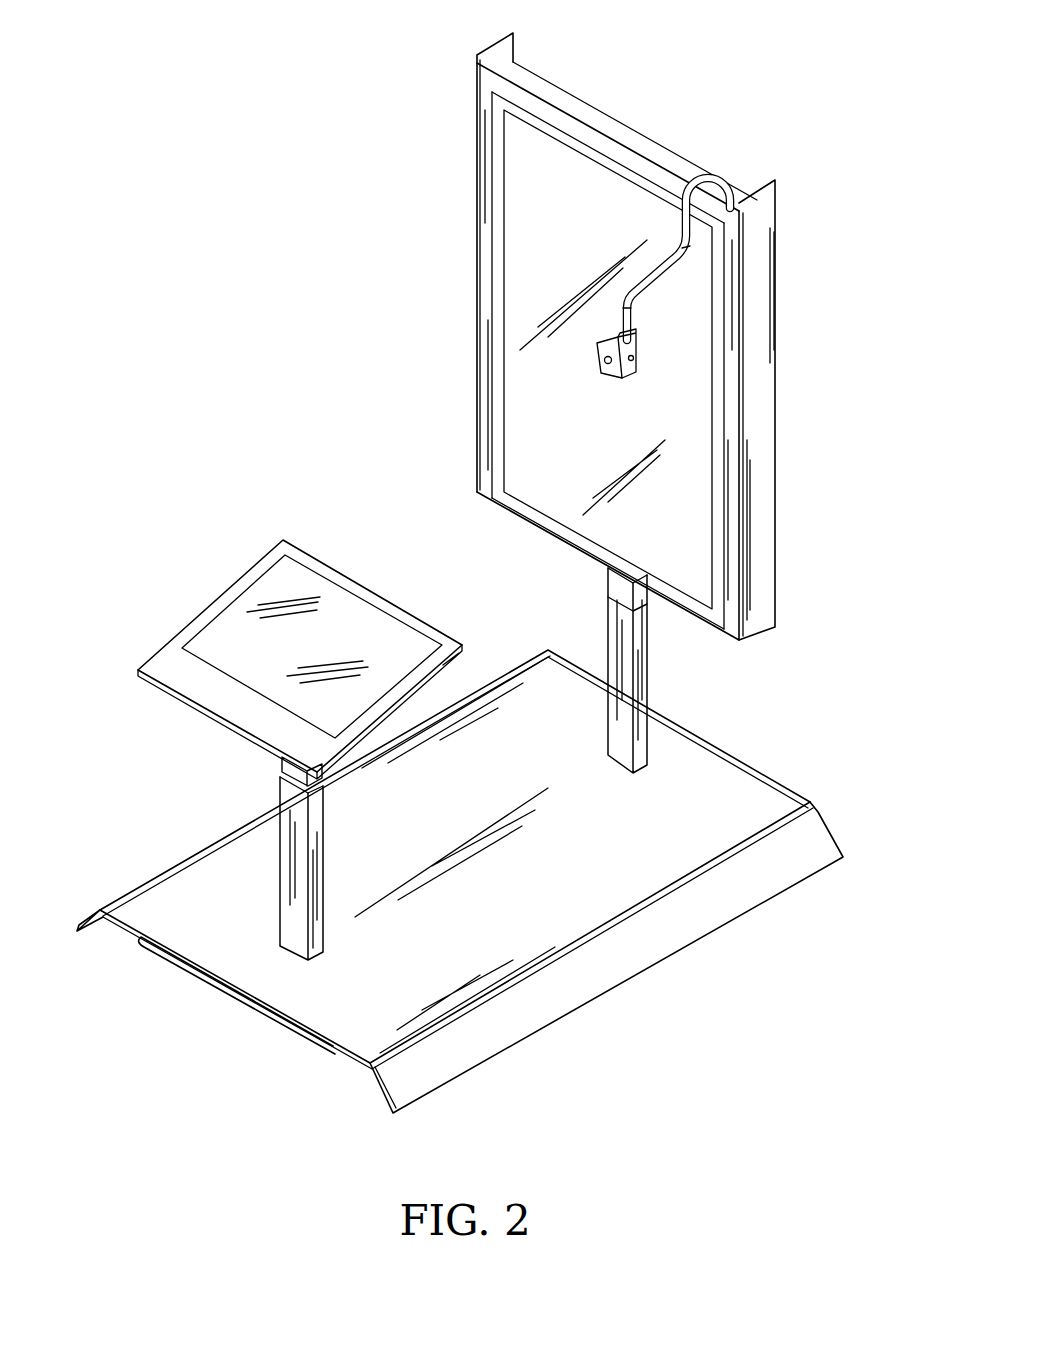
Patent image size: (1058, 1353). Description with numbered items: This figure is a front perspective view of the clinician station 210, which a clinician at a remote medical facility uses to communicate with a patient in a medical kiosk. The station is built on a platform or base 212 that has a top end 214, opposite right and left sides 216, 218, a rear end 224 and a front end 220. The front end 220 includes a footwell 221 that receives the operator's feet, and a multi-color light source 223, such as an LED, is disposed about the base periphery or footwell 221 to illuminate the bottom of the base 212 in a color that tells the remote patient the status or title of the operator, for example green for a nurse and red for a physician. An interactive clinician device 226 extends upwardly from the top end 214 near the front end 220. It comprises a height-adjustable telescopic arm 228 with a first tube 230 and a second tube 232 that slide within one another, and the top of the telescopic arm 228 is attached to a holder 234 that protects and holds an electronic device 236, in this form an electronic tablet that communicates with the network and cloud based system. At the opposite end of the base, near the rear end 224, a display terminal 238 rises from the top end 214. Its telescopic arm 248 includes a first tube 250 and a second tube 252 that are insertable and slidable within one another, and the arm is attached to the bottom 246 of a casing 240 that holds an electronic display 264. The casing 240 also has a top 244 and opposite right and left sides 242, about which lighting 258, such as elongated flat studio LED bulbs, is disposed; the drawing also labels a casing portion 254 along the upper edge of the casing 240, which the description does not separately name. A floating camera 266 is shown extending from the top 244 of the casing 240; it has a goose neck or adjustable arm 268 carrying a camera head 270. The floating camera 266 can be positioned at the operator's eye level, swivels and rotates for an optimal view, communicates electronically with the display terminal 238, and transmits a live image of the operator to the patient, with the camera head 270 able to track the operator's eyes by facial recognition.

The clinician station 210 is at (473, 574).
The base 212 is at (473, 876).
The top end 214 is at (748, 782).
The right side 216 is at (822, 838).
The left side 218 is at (519, 655).
The front end 220 is at (205, 1011).
The footwell 221 is at (112, 946).
The multi-color light source 223 is at (325, 1058).
The rear end 224 is at (693, 733).
The interactive clinician device 226 is at (264, 717).
The telescopic arm 228 is at (195, 858).
The first tube 230 is at (295, 800).
The second tube 232 is at (283, 762).
The holder 234 is at (160, 660).
The electronic device 236 is at (345, 600).
The display terminal 238 is at (603, 320).
The casing 240 is at (453, 408).
The right and left sides 242 is at (477, 52).
The top 244 is at (518, 65).
The bottom 246 is at (506, 505).
The telescopic arm 248 is at (682, 670).
The first tube 250 is at (641, 643).
The second tube 252 is at (607, 578).
The top bezel of display housing 254 is at (540, 125).
The lighting 258 is at (480, 310).
The electronic display 264 is at (548, 157).
The floating camera 266 is at (723, 323).
The adjustable arm 268 is at (700, 176).
The camera head 270 is at (632, 375).